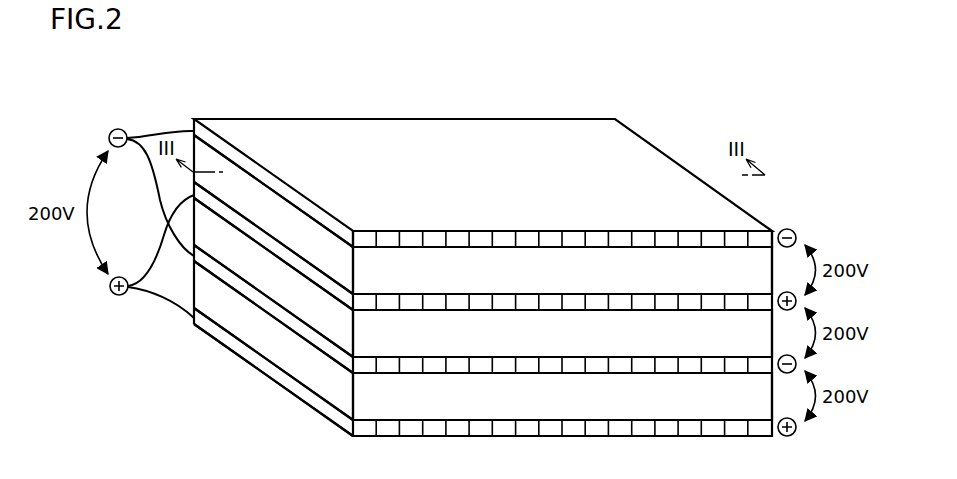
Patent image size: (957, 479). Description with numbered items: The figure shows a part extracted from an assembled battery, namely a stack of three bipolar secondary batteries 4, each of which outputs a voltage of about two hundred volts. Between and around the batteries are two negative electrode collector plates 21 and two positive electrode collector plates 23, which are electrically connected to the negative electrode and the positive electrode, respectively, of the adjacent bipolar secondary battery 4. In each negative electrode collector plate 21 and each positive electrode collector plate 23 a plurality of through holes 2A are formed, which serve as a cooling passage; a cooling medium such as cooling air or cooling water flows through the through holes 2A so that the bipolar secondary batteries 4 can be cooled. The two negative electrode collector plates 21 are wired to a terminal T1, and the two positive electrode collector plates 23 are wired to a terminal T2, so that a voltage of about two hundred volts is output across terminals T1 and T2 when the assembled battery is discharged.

The terminal T1 is at (117, 128).
The terminal T2 is at (118, 296).
The negative electrode collector plate 21 is at (310, 338).
The positive electrode collector plate 23 is at (310, 401).
The through hole 2A is at (362, 236).
The bipolar secondary battery 4 is at (754, 397).